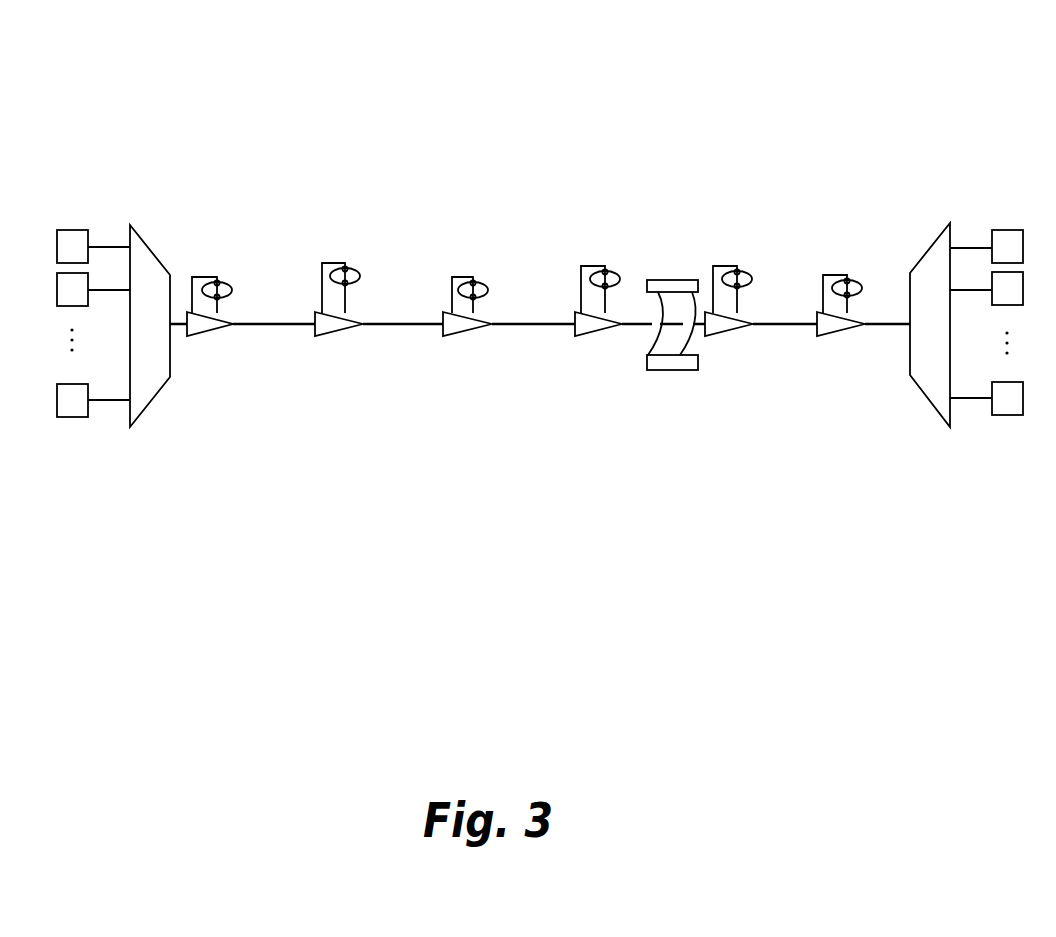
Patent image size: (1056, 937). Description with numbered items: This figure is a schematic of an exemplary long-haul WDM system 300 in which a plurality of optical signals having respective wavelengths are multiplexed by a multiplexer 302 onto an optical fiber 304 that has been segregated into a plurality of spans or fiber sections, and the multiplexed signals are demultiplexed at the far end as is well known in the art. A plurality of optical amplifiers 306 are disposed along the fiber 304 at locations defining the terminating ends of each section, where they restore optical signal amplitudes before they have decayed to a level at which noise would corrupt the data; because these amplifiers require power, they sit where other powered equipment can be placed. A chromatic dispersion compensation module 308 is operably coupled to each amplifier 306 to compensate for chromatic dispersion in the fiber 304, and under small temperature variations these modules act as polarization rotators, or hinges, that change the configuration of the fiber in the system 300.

The long-haul WDM system 300 is at (468, 100).
The multiplexer 302 is at (137, 240).
The optical fiber 304 is at (942, 228).
The optical amplifier 306 is at (205, 327).
The chromatic dispersion compensation module 308 is at (217, 283).